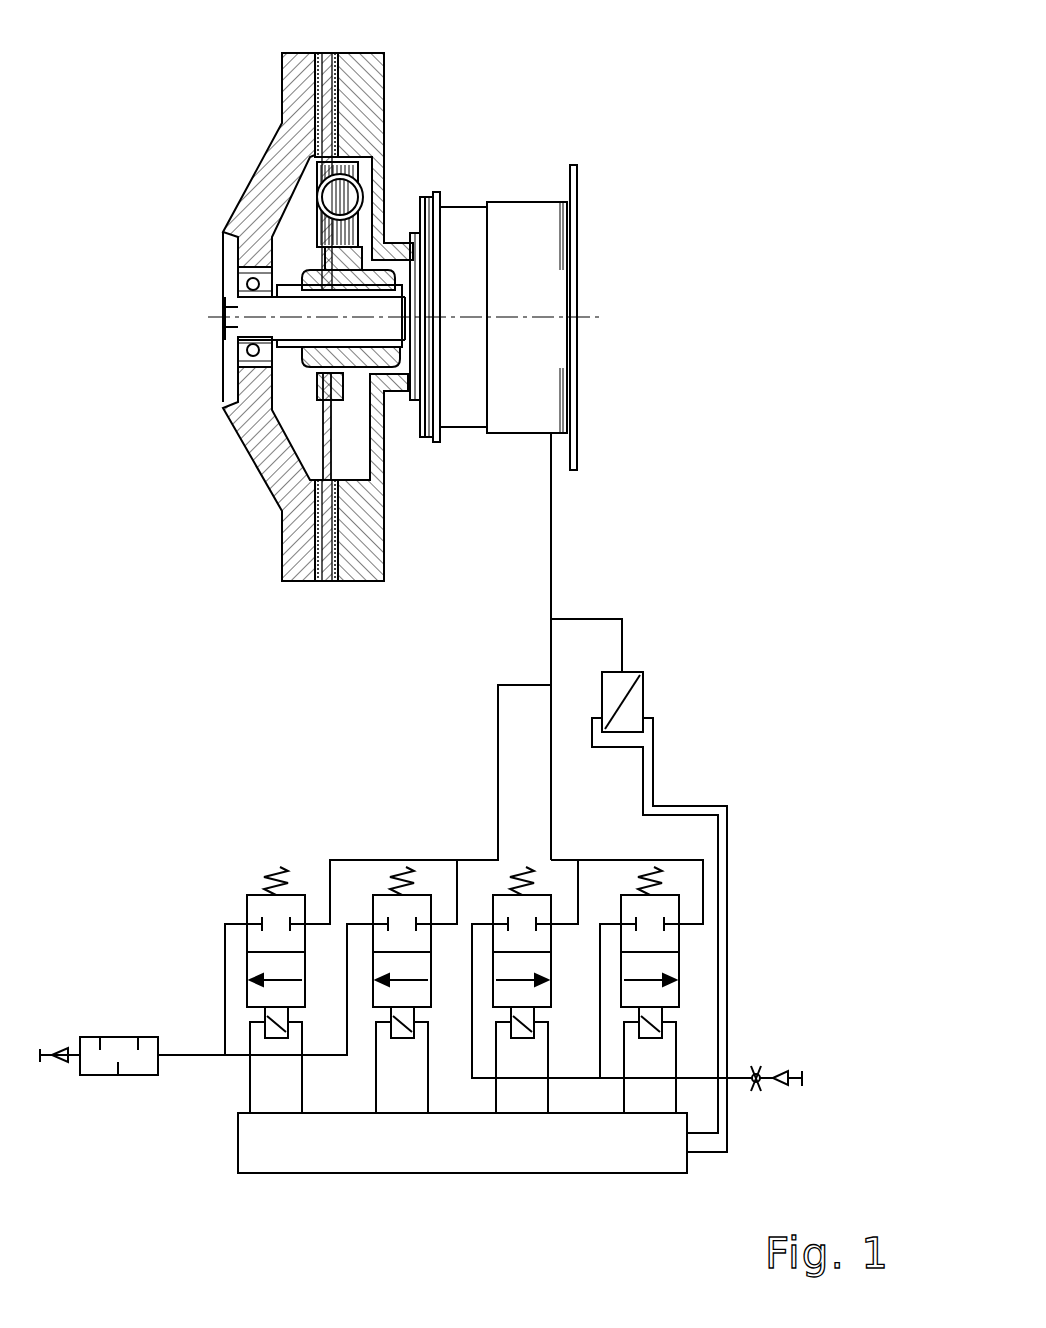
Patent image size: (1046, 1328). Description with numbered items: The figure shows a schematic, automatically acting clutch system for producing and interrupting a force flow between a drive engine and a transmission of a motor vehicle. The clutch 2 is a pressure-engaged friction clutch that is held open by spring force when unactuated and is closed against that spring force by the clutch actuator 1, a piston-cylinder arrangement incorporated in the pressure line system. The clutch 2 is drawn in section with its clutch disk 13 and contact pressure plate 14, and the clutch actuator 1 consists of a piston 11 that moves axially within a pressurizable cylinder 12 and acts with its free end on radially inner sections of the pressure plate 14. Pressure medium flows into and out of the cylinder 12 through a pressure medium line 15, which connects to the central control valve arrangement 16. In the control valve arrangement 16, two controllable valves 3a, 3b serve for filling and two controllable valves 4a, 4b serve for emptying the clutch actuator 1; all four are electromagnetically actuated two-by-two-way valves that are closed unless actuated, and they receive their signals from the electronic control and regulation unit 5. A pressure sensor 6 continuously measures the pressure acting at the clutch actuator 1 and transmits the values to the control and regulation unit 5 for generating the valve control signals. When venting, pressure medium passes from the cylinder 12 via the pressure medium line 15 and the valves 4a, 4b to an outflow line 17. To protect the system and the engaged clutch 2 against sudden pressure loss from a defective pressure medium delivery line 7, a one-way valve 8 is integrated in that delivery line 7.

The clutch actuator 1 is at (460, 237).
The clutch 2 is at (410, 146).
The piston 11 is at (420, 247).
The cylinder 12 is at (525, 230).
The clutch disk 13 is at (323, 450).
The contact pressure plate 14 is at (353, 540).
The pressure medium line 15 is at (551, 535).
The control valve arrangement 16 is at (472, 856).
The outflow line 17 is at (190, 1057).
The controllable valve for filling 3a is at (662, 907).
The controllable valve for filling 3b is at (510, 905).
The controllable valve for emptying 4a is at (273, 912).
The controllable valve for emptying 4b is at (390, 903).
The electronic control and regulation unit 5 is at (337, 1142).
The pressure sensor 6 is at (643, 695).
The pressure medium delivery line 7 is at (788, 1082).
The one-way valve 8 is at (752, 1068).